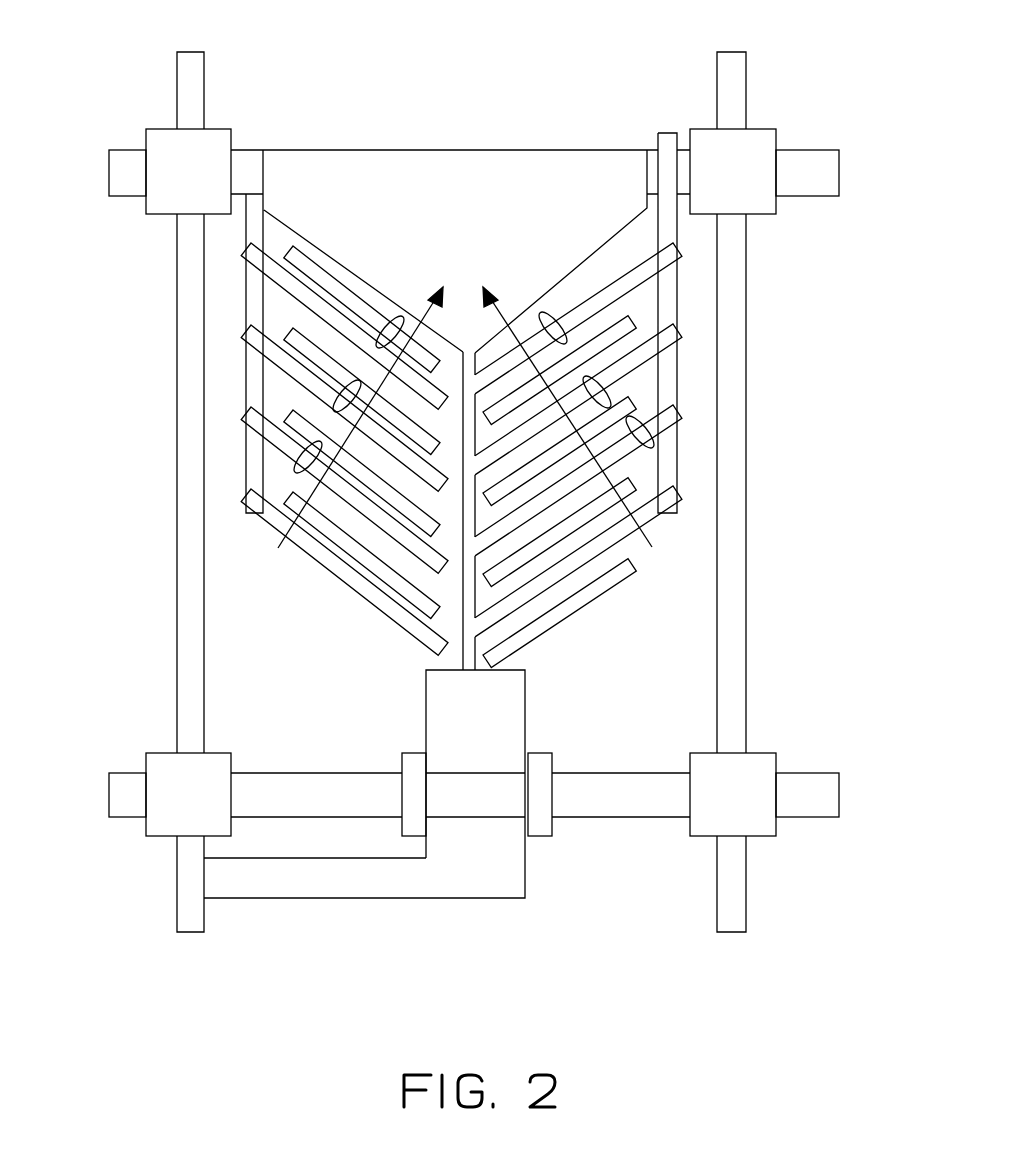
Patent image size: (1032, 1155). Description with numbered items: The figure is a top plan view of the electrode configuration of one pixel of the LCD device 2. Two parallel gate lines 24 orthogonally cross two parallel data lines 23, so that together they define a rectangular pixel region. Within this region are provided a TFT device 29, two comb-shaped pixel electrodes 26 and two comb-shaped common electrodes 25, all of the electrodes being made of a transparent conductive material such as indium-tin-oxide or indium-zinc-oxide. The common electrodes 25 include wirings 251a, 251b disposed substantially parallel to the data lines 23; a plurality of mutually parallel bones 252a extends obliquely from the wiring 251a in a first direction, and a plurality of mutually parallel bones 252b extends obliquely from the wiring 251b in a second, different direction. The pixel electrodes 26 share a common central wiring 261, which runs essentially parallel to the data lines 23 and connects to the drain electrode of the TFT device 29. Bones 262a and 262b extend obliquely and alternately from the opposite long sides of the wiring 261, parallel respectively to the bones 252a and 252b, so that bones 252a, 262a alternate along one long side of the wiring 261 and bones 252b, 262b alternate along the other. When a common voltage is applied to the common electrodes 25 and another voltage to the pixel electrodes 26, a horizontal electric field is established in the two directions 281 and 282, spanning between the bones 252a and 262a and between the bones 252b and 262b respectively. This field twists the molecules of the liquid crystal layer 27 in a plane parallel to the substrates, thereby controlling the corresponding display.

The LCD device 2 is at (472, 33).
The data lines 23 is at (192, 92).
The gate lines 24 is at (812, 177).
The common electrodes 25 is at (90, 290).
The wiring 251a is at (258, 293).
The bones 252a is at (258, 343).
The wiring 251b is at (668, 290).
The bones 252b is at (668, 343).
The pixel electrodes 26 is at (683, 610).
The central wiring 261 is at (467, 587).
The bones 262a is at (440, 620).
The bones 262b is at (520, 582).
The liquid crystal layer 27 is at (555, 325).
The direction 281 is at (430, 307).
The direction 282 is at (500, 303).
The TFT device 29 is at (488, 880).